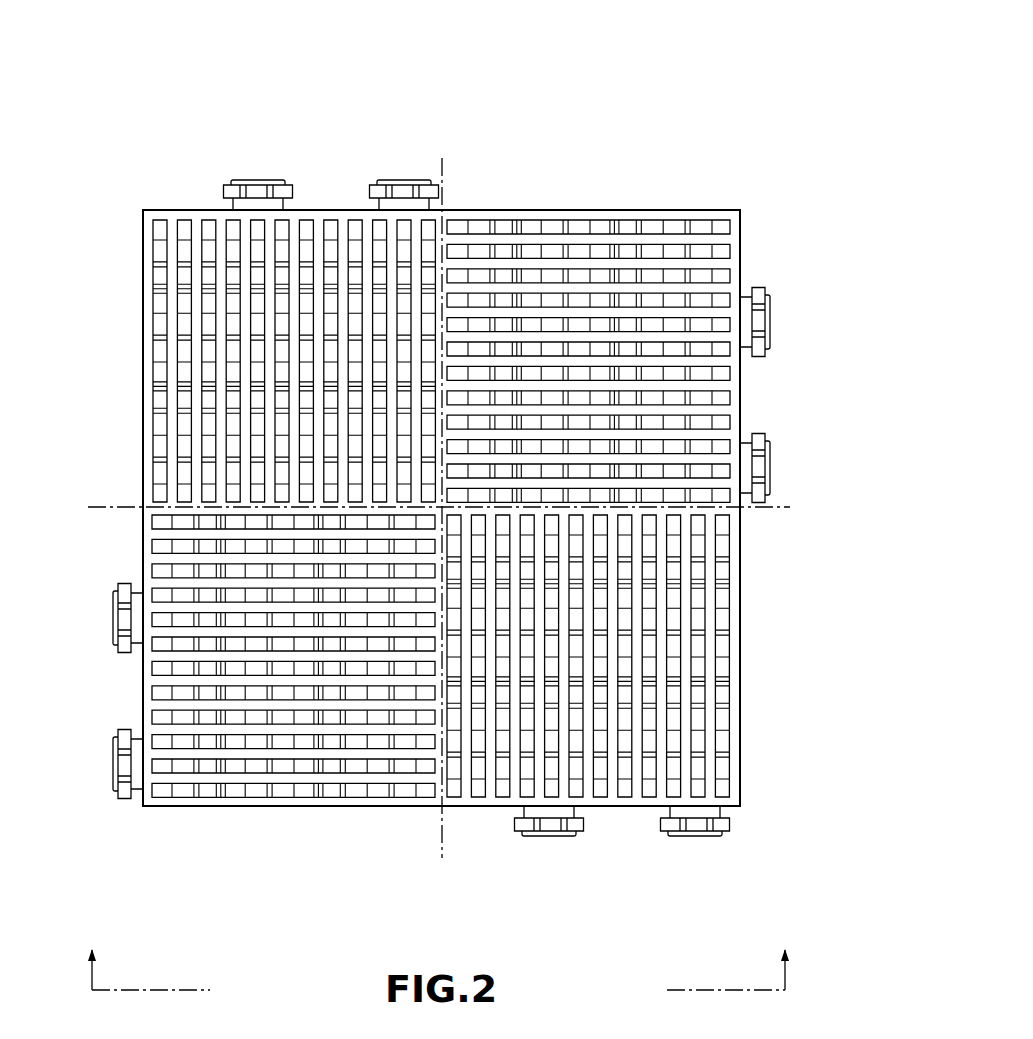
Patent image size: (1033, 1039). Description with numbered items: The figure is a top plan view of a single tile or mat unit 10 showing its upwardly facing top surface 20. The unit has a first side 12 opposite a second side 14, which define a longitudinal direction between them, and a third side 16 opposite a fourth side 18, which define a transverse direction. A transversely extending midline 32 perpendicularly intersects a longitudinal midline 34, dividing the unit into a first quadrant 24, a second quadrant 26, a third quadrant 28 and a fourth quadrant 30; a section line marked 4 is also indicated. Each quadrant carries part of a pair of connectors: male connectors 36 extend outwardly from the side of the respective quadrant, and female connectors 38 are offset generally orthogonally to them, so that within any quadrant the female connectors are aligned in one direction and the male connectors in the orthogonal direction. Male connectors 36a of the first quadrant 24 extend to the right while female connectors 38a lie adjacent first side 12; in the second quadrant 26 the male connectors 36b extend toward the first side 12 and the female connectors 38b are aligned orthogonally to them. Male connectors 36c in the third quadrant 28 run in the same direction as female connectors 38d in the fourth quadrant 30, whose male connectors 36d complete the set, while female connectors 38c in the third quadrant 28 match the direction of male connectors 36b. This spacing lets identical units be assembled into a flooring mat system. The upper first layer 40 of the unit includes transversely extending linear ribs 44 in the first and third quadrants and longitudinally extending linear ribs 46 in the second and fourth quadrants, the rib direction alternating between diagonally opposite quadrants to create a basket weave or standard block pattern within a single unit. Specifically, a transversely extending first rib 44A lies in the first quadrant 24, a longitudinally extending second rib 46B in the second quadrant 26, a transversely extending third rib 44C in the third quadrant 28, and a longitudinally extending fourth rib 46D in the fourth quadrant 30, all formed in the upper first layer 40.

The single mat unit 10 is at (632, 77).
The first side 12 is at (342, 206).
The second side 14 is at (618, 810).
The third side 16 is at (140, 692).
The fourth side 18 is at (744, 270).
The top surface 20 is at (667, 690).
The first quadrant 24 is at (742, 203).
The second quadrant 26 is at (142, 200).
The third quadrant 28 is at (142, 816).
The fourth quadrant 30 is at (750, 816).
The transverse midline 32 is at (97, 510).
The longitudinal midline 34 is at (440, 848).
The male connectors 36 is at (444, 506).
The male connectors of first quadrant 36a is at (762, 470).
The male connectors of second quadrant 36b is at (404, 188).
The male connectors of third quadrant 36c is at (118, 618).
The male connectors of fourth quadrant 36d is at (549, 826).
The female connectors 38 is at (446, 510).
The female connectors of first quadrant 38a is at (702, 227).
The female connectors of second quadrant 38b is at (158, 320).
The female connectors of third quadrant 38c is at (263, 792).
The female connectors of fourth quadrant 38d is at (725, 603).
The upper first layer 40 is at (214, 402).
The transversely extending linear ribs 44 is at (441, 510).
The first rib 44A is at (627, 358).
The third rib 44C is at (257, 653).
The longitudinally extending linear ribs 46 is at (446, 508).
The second rib 46B is at (290, 402).
The fourth rib 46D is at (590, 618).
The section line 4- 4 is at (440, 954).